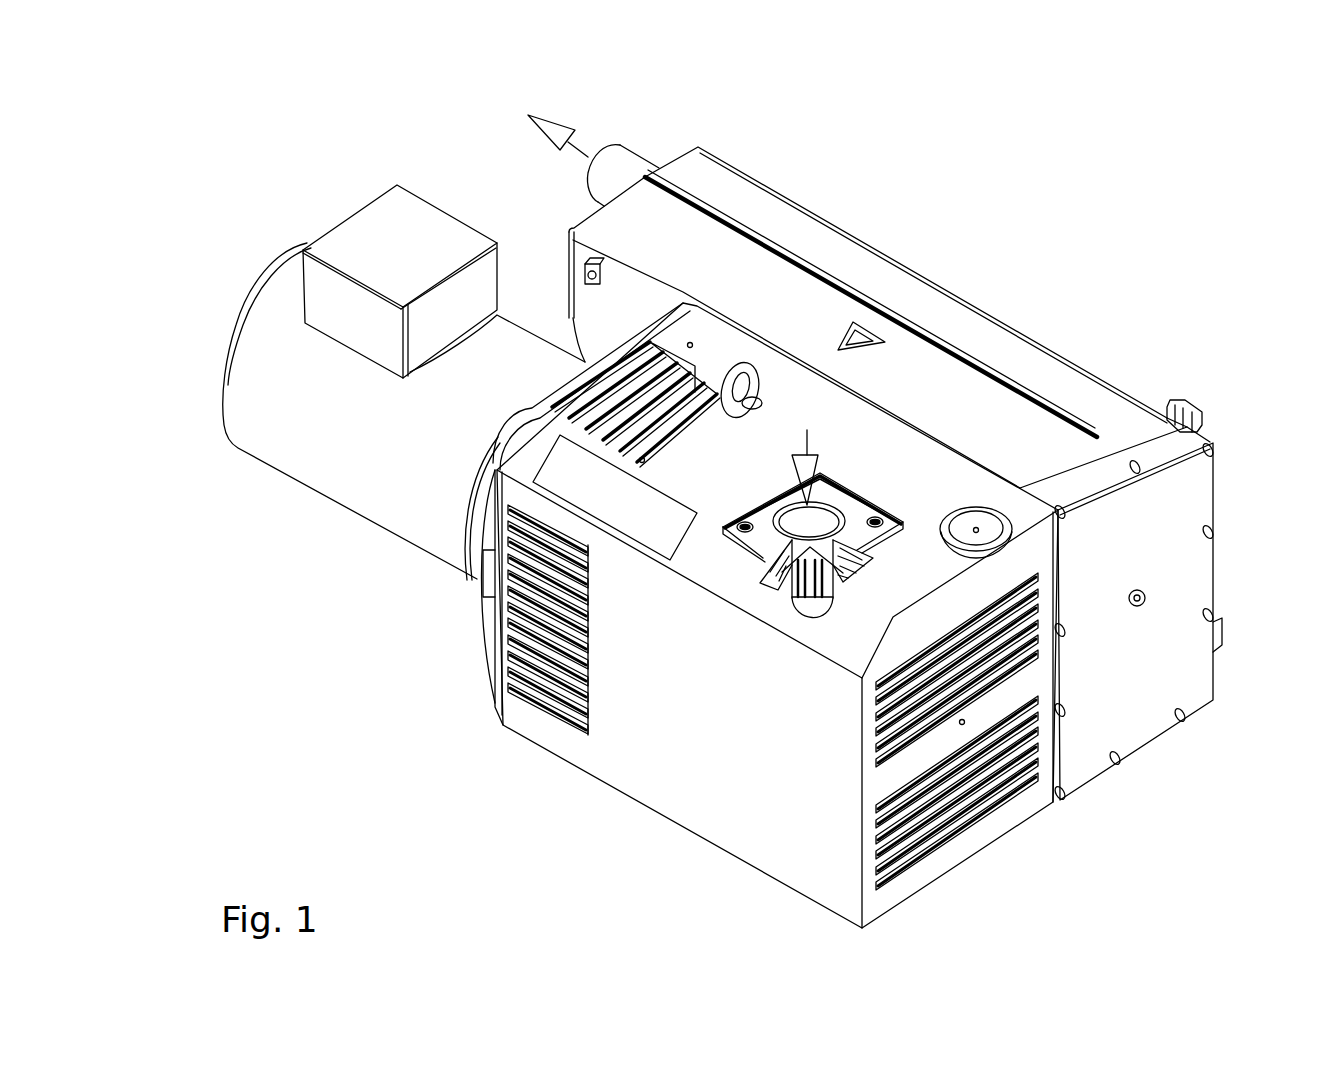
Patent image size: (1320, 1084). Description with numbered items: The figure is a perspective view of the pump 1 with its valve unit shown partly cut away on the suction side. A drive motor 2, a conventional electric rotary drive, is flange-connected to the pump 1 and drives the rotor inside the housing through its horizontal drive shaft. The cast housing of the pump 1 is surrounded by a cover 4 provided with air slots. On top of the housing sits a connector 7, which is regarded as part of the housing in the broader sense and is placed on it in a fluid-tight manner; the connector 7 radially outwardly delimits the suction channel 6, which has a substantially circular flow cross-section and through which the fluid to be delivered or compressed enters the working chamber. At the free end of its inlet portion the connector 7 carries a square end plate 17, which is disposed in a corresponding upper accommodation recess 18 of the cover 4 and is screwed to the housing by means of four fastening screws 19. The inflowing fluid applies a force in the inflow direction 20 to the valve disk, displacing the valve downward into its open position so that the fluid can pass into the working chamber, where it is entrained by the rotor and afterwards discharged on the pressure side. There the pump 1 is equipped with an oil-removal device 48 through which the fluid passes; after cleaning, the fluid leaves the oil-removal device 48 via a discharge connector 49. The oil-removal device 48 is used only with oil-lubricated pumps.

The pump 1 is at (510, 745).
The drive motor 2 is at (360, 522).
The cover 4 is at (628, 780).
The suction channel 6 is at (792, 500).
The connector 7 is at (822, 507).
The end plate 17 is at (866, 518).
The accommodation recess 18 is at (852, 497).
The fastening screws 19 is at (838, 488).
The inflow direction 20 is at (823, 473).
The oil-removal device 48 is at (1093, 402).
The discharge connector 49 is at (632, 163).